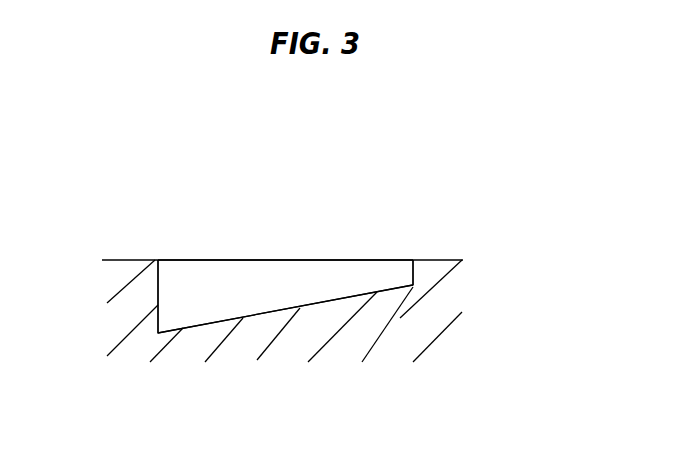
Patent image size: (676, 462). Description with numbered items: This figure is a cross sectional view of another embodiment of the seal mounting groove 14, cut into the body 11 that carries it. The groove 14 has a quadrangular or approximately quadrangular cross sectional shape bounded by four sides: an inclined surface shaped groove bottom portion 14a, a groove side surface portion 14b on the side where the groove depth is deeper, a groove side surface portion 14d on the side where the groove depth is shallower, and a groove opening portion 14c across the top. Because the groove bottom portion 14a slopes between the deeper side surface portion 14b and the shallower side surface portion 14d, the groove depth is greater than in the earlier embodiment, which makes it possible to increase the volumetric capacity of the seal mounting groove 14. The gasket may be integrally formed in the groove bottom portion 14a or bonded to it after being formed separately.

The substrate 11 is at (462, 312).
The seal mounting groove 14 is at (306, 282).
The groove bottom portion 14a is at (279, 305).
The groove side surface portion 14b is at (163, 278).
The groove opening portion 14c is at (272, 260).
The groove side surface portion 14d is at (410, 273).